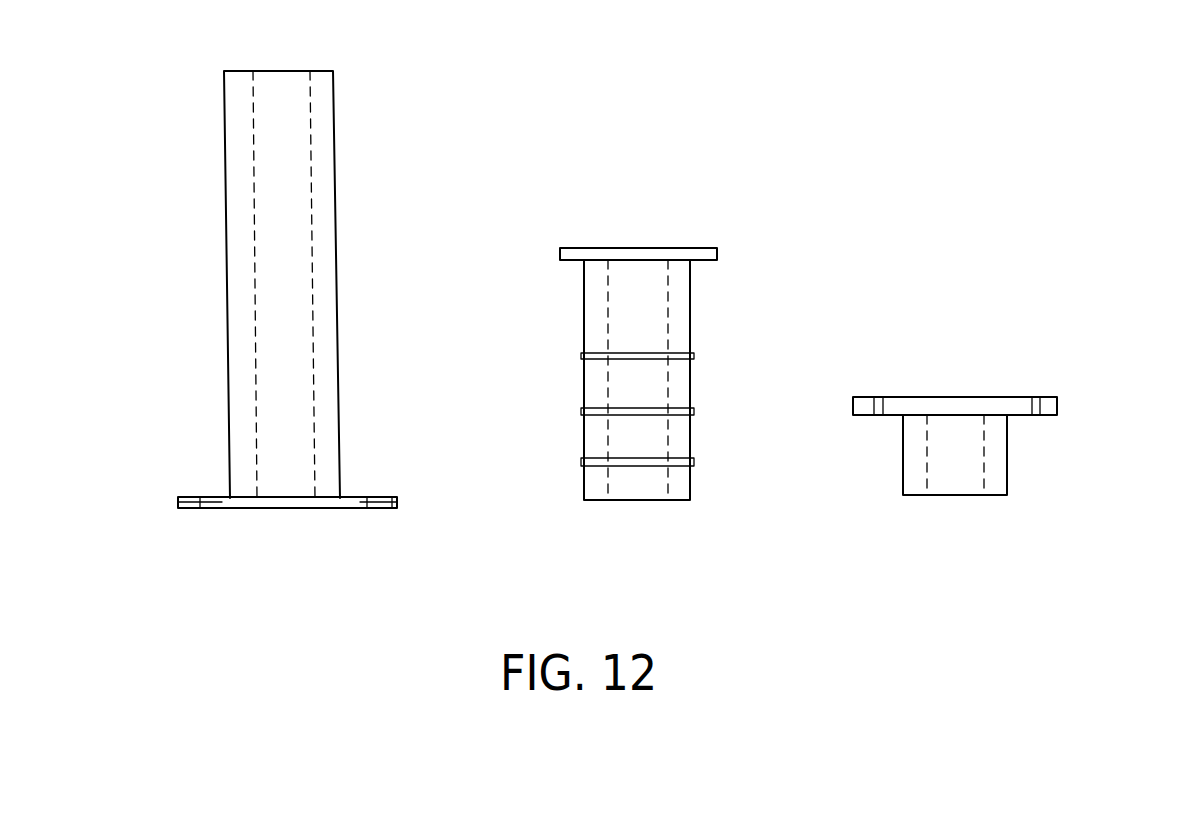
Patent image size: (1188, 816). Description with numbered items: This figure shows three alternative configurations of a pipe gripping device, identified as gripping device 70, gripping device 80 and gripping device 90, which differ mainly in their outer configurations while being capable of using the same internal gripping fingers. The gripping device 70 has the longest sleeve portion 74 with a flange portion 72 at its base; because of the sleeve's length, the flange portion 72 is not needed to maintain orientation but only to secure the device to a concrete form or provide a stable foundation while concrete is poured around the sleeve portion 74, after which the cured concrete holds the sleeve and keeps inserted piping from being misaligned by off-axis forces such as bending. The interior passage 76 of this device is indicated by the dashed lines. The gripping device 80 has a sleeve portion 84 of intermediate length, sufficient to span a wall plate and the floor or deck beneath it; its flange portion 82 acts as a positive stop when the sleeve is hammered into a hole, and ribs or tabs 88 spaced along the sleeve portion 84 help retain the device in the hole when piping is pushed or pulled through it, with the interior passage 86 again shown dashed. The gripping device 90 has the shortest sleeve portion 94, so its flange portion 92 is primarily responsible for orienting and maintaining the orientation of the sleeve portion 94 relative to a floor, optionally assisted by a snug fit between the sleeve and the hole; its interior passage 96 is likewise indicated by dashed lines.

The gripping device 70 is at (280, 291).
The flange portion 72 is at (215, 512).
The sleeve portion 74 is at (230, 349).
The internal bore 76 is at (256, 95).
The gripping device 80 is at (646, 364).
The flange portion 82 is at (572, 250).
The sleeve portion 84 is at (585, 394).
The internal bore 86 is at (668, 486).
The ribs or tabs 88 is at (694, 460).
The gripping device 90 is at (975, 433).
The flange portion 92 is at (890, 400).
The sleeve portion 94 is at (903, 460).
The internal bore 96 is at (930, 478).